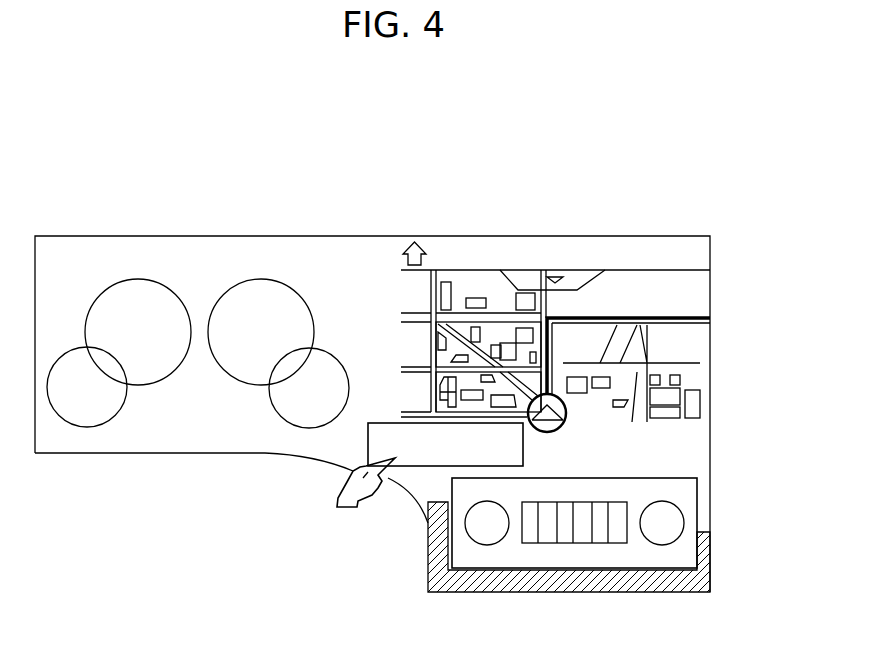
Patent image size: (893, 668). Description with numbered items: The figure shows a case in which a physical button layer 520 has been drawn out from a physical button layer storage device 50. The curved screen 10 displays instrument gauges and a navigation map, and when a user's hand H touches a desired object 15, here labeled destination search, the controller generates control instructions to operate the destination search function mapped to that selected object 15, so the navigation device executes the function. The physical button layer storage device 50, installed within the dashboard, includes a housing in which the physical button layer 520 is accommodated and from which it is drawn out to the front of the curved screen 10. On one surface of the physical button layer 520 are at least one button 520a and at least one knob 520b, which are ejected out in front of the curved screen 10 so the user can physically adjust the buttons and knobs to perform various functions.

The curved screen 10 is at (548, 236).
The object 15 is at (390, 423).
The user's hand H is at (352, 487).
The physical button layer storage device 50 is at (715, 570).
The physical button layer 520 is at (640, 557).
The button 520a is at (565, 539).
The knob 520b is at (487, 541).